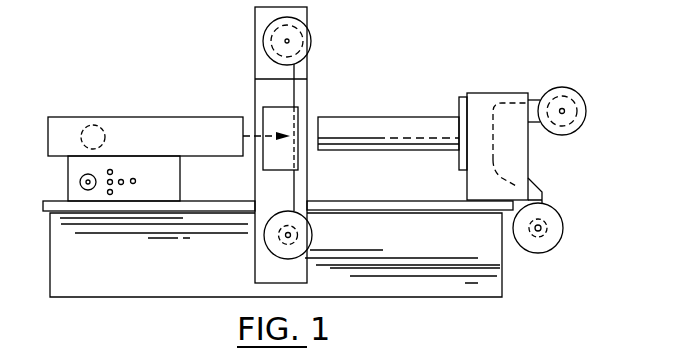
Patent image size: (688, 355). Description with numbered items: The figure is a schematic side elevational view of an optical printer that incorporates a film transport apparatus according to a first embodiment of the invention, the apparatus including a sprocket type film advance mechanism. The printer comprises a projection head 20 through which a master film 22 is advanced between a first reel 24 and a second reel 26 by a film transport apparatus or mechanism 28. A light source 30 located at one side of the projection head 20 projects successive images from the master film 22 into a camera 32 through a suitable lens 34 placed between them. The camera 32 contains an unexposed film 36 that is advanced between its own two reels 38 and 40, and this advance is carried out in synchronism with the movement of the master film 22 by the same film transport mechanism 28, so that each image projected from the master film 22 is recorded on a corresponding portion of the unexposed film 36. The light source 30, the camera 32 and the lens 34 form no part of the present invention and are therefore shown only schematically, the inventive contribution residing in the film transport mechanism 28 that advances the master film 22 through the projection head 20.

The projection head 20 is at (318, 37).
The master film 22 is at (297, 88).
The reel 24 is at (270, 240).
The reel 26 is at (263, 42).
The film transport apparatus 28 is at (300, 117).
The light source 30 is at (125, 117).
The camera 32 is at (488, 99).
The lens 34 is at (387, 132).
The unexposed film 36 is at (532, 172).
The reel 38 is at (545, 102).
The reel 40 is at (563, 222).